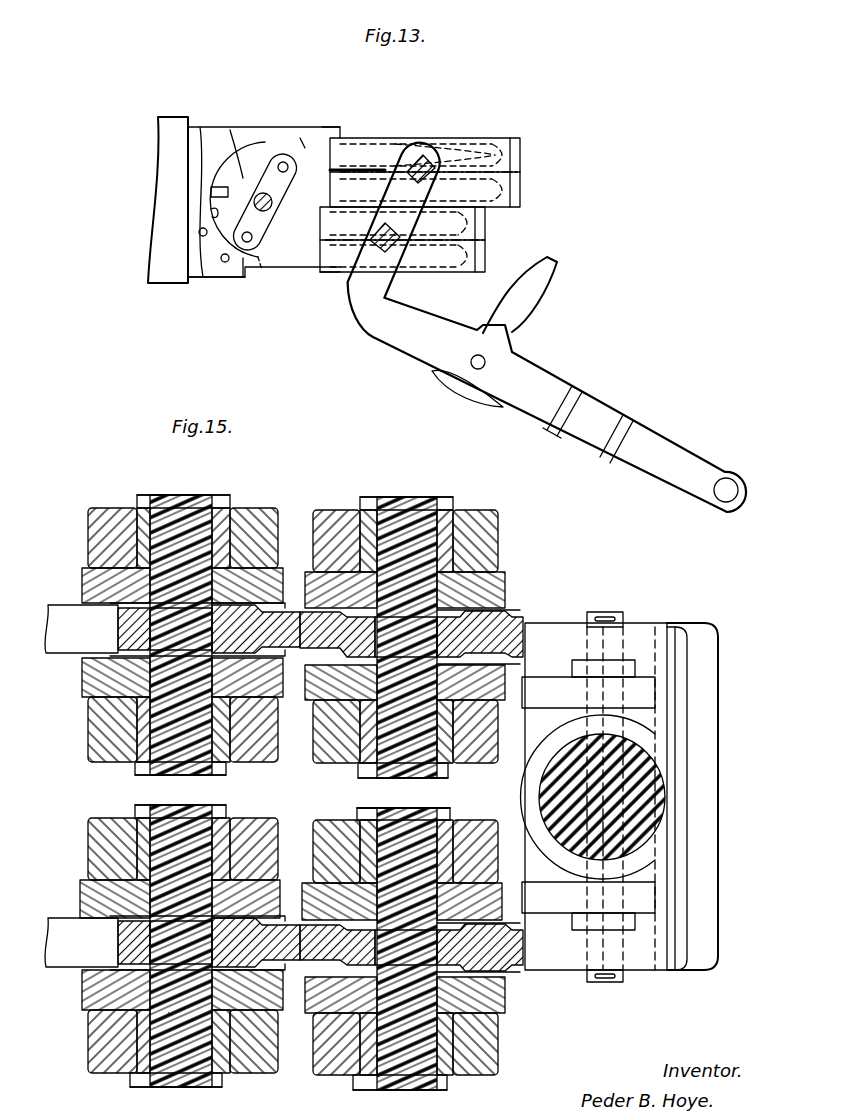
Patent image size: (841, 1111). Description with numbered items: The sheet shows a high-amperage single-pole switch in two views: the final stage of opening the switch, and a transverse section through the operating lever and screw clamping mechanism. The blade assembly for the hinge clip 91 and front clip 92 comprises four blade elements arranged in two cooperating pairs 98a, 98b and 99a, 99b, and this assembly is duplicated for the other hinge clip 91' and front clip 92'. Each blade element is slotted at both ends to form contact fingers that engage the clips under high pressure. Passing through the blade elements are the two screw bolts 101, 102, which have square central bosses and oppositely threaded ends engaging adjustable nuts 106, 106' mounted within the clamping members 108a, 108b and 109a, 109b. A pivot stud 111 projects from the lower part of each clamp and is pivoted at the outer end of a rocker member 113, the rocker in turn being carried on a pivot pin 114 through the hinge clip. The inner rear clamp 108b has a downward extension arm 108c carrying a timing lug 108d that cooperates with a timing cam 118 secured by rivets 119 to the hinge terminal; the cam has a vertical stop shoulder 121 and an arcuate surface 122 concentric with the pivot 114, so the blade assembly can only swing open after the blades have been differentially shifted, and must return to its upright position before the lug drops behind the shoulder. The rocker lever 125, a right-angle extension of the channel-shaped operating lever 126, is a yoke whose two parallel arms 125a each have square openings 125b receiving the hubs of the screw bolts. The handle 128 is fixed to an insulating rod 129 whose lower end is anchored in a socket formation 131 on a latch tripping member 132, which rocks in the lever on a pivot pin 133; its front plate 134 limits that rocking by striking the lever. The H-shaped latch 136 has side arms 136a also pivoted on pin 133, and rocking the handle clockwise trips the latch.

In FIG. 13, the front terminal or clip 92 is at (157, 200).
In FIG. 13, the front terminal or clip 92' is at (358, 123).
In FIG. 13, the timing lug 108d is at (212, 193).
In FIG. 13, the arcuate surface 122 is at (211, 213).
In FIG. 13, the rivets 119 is at (200, 234).
In FIG. 13, the timing cam 118 is at (213, 262).
In FIG. 13, the stop shoulder 121 is at (246, 273).
In FIG. 13, the rocker member 113 is at (273, 182).
In FIG. 13, the pivot stud 111 is at (285, 161).
In FIG. 13, the pivot screw or pin 114 is at (262, 193).
In FIG. 13, the extension portion or arm 108c is at (238, 162).
In FIG. 13, the inner rear clamping member 108b is at (312, 146).
In FIG. 15, the inner rear clamping member 108b is at (92, 750).
In FIG. 13, the blade element 98b is at (521, 160).
In FIG. 15, the blade element 98b is at (84, 690).
In FIG. 13, the blade element 99b is at (488, 232).
In FIG. 15, the blade element 99b is at (499, 702).
In FIG. 13, the rocker lever 125 is at (412, 224).
In FIG. 13, the screw bolt 101 is at (421, 162).
In FIG. 15, the screw bolt 101 is at (184, 500).
In FIG. 13, the screw bolt 102 is at (378, 250).
In FIG. 15, the screw bolt 102 is at (408, 500).
In FIG. 13, the inner rear clamping member 109b is at (278, 264).
In FIG. 15, the inner rear clamping member 109b is at (486, 768).
In FIG. 13, the operating lever 126 is at (410, 338).
In FIG. 13, the handle 128 is at (742, 484).
In FIG. 13, the pivot pin 133 is at (486, 361).
In FIG. 15, the pivot pin 133 is at (600, 983).
In FIG. 13, the latch 136 is at (540, 294).
In FIG. 13, the front plate portion 134 is at (466, 393).
In FIG. 15, the front plate portion 134 is at (760, 900).
In FIG. 15, the outer clamping member 108a is at (100, 530).
In FIG. 15, the blade element 98a is at (84, 582).
In FIG. 15, the outer clamping member 109a is at (500, 542).
In FIG. 15, the blade element 99a is at (506, 589).
In FIG. 15, the adjustable nut 106 is at (291, 798).
In FIG. 15, the adjustable nut 106' is at (358, 800).
In FIG. 15, the hinge terminal or clip 91' is at (72, 617).
In FIG. 15, the hinge terminal or clip 91 is at (76, 927).
In FIG. 15, the parallel arm portion 125a is at (124, 635).
In FIG. 15, the square opening 125b is at (160, 637).
In FIG. 15, the socket formation 131 is at (646, 734).
In FIG. 15, the insulating section or rod 129 is at (646, 791).
In FIG. 15, the latch tripping member 132 is at (678, 840).
In FIG. 15, the side arm portion 136a is at (544, 692).